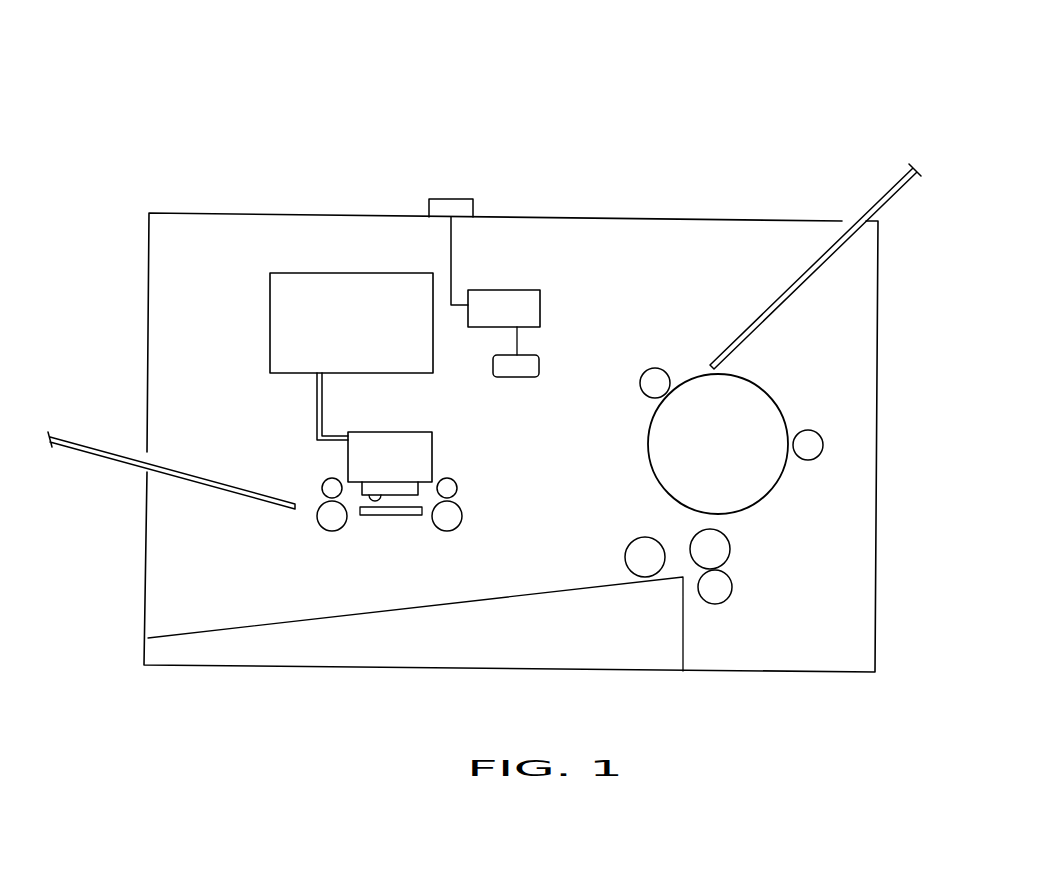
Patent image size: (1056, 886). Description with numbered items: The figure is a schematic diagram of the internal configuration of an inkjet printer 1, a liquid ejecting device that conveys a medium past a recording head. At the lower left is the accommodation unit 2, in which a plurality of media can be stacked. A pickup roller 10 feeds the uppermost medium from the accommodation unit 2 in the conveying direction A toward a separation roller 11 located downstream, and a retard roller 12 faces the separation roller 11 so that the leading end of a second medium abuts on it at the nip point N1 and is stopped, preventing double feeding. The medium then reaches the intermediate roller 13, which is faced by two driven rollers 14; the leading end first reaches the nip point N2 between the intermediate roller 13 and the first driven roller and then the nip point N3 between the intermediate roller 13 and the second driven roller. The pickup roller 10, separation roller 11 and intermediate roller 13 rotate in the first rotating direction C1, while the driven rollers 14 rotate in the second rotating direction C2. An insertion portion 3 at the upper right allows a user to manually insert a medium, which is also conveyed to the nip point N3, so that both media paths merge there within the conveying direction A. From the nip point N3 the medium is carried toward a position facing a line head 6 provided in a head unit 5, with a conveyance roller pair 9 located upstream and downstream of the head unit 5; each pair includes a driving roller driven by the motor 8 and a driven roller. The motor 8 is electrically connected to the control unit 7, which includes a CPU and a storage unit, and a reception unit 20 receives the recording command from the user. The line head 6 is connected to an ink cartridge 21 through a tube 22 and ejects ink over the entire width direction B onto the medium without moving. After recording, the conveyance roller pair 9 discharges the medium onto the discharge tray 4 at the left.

The printer 1 is at (958, 116).
The accommodation unit 2 is at (262, 602).
The insertion portion 3 is at (857, 197).
The discharge tray 4 is at (169, 451).
The head unit 5 is at (385, 432).
The line head 6 is at (372, 497).
The control unit 7 is at (502, 290).
The motor 8 is at (540, 366).
The conveyance roller pair 9 is at (311, 477).
The pickup roller 10 is at (645, 545).
The separation roller 11 is at (708, 540).
The retard roller 12 is at (718, 596).
The intermediate roller 13 is at (753, 403).
The driven rollers 14 is at (653, 369).
The reception unit 20 is at (455, 210).
The ink cartridge 21 is at (297, 273).
The tube 22 is at (315, 392).
The nip point N1 is at (738, 573).
The nip point N2 is at (797, 466).
The nip point N3 is at (642, 410).
The conveying direction A is at (211, 463).
The width direction B is at (980, 590).
The first rotating direction C1 is at (946, 623).
The second rotating direction C2 is at (997, 623).